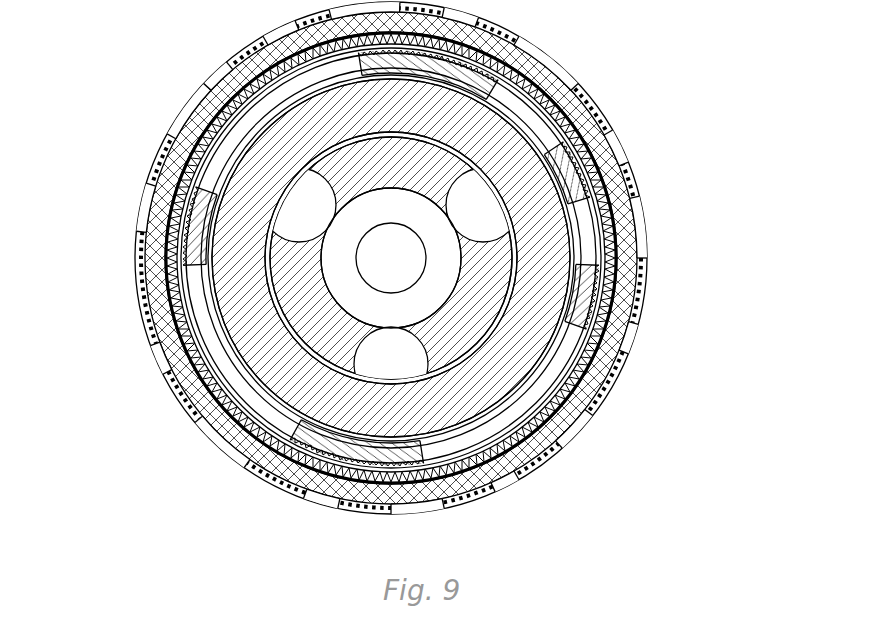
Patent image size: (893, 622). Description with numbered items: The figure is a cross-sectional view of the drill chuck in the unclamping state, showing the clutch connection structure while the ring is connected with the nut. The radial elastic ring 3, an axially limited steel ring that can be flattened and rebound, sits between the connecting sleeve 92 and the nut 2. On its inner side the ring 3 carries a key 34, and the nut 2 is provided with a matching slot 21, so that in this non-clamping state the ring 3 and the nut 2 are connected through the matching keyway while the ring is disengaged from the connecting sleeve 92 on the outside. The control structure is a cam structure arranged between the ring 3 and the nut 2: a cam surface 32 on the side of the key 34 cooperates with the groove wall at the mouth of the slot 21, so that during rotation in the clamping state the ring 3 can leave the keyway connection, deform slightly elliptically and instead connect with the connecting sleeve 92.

The nut 2 is at (453, 400).
The radial elastic ring 3 is at (213, 173).
The slot 21 is at (347, 420).
The cam surface 32 is at (350, 445).
The key 34 is at (357, 440).
The connecting sleeve 92 is at (175, 318).